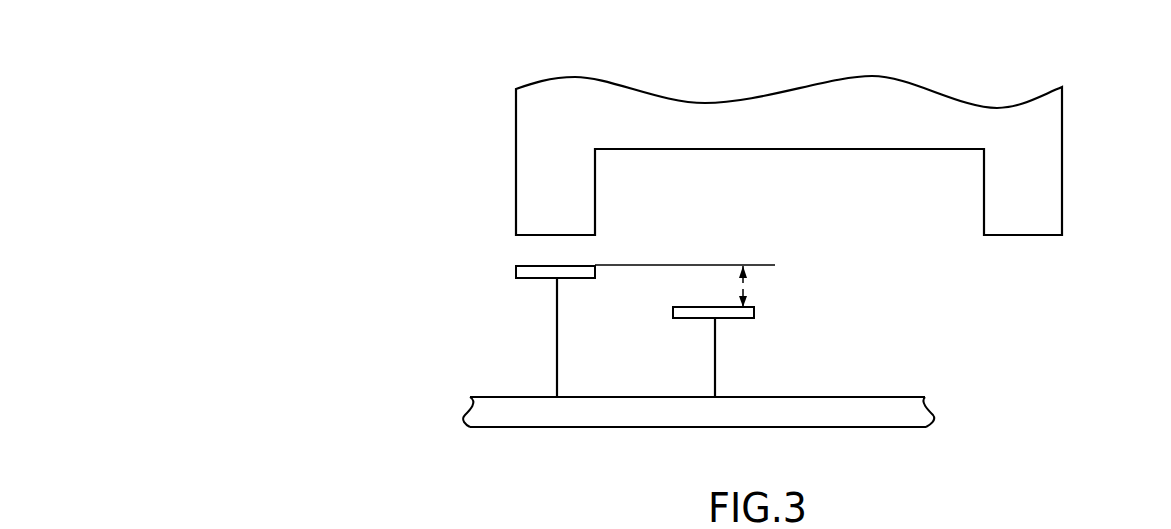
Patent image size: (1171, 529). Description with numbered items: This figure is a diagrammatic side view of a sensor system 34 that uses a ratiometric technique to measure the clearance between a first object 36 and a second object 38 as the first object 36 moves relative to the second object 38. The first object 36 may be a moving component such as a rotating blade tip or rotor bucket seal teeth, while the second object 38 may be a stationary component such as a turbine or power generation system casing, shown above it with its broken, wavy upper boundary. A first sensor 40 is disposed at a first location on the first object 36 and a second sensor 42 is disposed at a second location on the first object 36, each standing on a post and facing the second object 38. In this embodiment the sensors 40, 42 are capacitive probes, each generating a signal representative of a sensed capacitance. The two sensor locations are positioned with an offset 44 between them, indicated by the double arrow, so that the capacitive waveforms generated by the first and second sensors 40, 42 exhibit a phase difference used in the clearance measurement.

The sensor system 34 is at (195, 100).
The first object 36 is at (880, 397).
The second object 38 is at (1062, 159).
The first sensor 40 is at (556, 338).
The second sensor 42 is at (714, 357).
The offset 44 is at (745, 285).